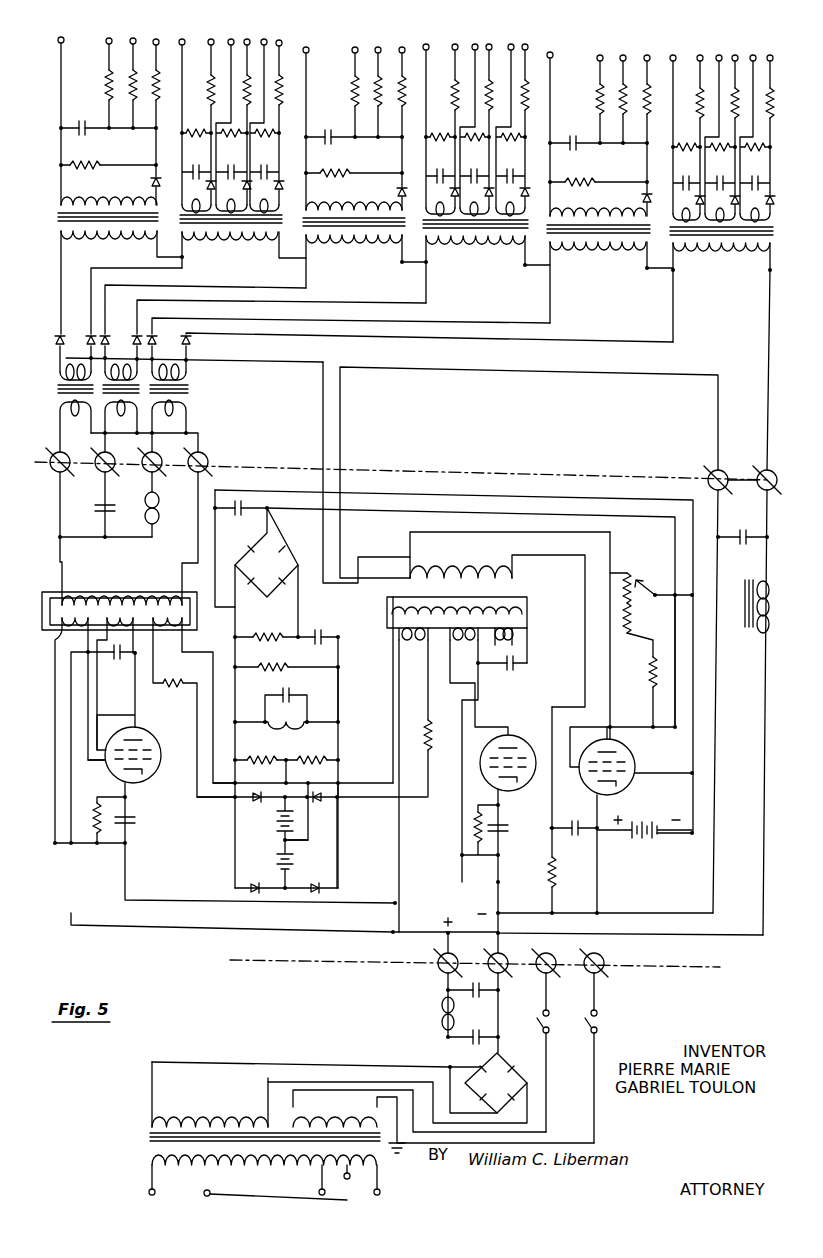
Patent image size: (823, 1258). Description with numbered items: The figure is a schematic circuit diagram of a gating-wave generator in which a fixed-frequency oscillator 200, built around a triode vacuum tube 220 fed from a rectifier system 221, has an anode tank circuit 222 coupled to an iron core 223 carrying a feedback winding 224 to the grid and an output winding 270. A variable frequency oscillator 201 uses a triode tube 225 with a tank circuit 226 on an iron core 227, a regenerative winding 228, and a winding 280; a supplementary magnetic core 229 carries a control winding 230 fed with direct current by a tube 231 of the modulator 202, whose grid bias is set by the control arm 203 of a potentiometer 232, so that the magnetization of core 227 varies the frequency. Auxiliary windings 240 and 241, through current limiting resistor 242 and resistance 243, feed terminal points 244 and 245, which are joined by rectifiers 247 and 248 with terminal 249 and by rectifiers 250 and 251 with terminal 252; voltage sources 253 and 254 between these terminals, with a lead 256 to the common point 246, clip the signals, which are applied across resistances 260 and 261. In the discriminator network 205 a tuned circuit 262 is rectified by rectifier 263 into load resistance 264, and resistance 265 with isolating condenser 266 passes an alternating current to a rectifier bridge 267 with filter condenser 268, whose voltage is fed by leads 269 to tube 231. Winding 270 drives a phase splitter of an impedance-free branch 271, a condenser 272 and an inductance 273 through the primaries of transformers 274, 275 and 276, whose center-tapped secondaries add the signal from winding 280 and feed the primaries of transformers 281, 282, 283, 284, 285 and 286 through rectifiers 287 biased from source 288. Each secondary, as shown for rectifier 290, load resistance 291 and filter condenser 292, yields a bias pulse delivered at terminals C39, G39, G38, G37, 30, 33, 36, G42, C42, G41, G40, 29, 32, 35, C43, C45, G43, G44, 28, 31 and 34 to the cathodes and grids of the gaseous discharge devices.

The cathode terminal C39 is at (61, 37).
The grid terminal G39 is at (112, 25).
The grid terminal G38 is at (133, 38).
The grid terminal G37 is at (156, 42).
The gaseous discharge device terminals 30 is at (196, 44).
The gaseous discharge device terminals 33 is at (234, 42).
The gaseous discharge device terminals 36 is at (274, 42).
The grid terminal G42 is at (308, 48).
The cathode terminal C42 is at (356, 48).
The grid terminal G41 is at (380, 48).
The grid terminal G40 is at (407, 48).
The gaseous discharge device terminals 29 is at (458, 50).
The gaseous discharge device terminals 32 is at (498, 49).
The gaseous discharge device terminals 35 is at (525, 50).
The cathode terminal C43 is at (550, 52).
The cathode terminal C45 is at (597, 58).
The grid terminal G43 is at (610, 54).
The grid terminal G44 is at (647, 54).
The gaseous discharge device terminals 28 is at (684, 60).
The gaseous discharge device terminals 31 is at (726, 56).
The gaseous discharge device terminals 34 is at (763, 54).
The filter condenser 292 is at (82, 121).
The load resistance 291 is at (94, 165).
The rectifier 290 is at (150, 186).
The transformer 281 is at (98, 245).
The transformer 282 is at (226, 266).
The transformer 283 is at (344, 267).
The transformer 284 is at (476, 268).
The transformer 285 is at (586, 279).
The transformer 286 is at (710, 281).
The rectifiers 287 is at (60, 336).
The transformer 274 is at (58, 404).
The transformer 275 is at (196, 392).
The transformer 276 is at (196, 405).
The bias voltage source 288 is at (760, 464).
The impedance-free circuit 271 is at (63, 504).
The condenser 272 is at (98, 516).
The inductance 273 is at (157, 522).
The filter condenser 268 is at (245, 506).
The leads 269 is at (415, 506).
The rectifier bridge 267 is at (276, 550).
The supplementary magnetic core 229 is at (396, 558).
The control winding 230 is at (448, 564).
The control arm 203 is at (656, 578).
The potentiometer 232 is at (672, 619).
The winding 270 is at (106, 590).
The iron core 223 is at (52, 632).
The winding 224 is at (64, 660).
The tank circuit 222 is at (114, 660).
The auxiliary winding 240 is at (185, 652).
The current limiting resistor 242 is at (169, 686).
The resistance 265 is at (282, 636).
The isolating condenser 266 is at (318, 630).
The load resistance 264 is at (275, 665).
The discriminator network 205 is at (373, 676).
The rectifier 263 is at (235, 702).
The tuned circuit 262 is at (290, 698).
The winding 280 is at (466, 628).
The iron core 227 is at (532, 636).
The auxiliary winding 241 is at (404, 644).
The winding 228 is at (453, 644).
The tank circuit 226 is at (526, 662).
The triode vacuum tube 220 is at (152, 728).
The resistance 260 is at (277, 756).
The resistance 261 is at (325, 756).
The current limiting resistance 243 is at (430, 738).
The variable frequency oscillator 201 is at (545, 730).
The tube 231 is at (630, 756).
The oscillator 200 is at (180, 806).
The common point 246 is at (279, 782).
The terminal 249 is at (292, 786).
The terminal point 244 is at (226, 804).
The rectifier 247 is at (276, 816).
The terminal point 245 is at (332, 810).
The rectifier 248 is at (338, 820).
The voltage source 253 is at (278, 840).
The terminal 252 is at (290, 843).
The lead 256 is at (338, 830).
The voltage source 254 is at (276, 858).
The rectifier 250 is at (242, 891).
The rectifier 251 is at (322, 890).
The triode tube 225 is at (507, 796).
The modulator 202 is at (667, 808).
The rectifier system 221 is at (428, 1025).